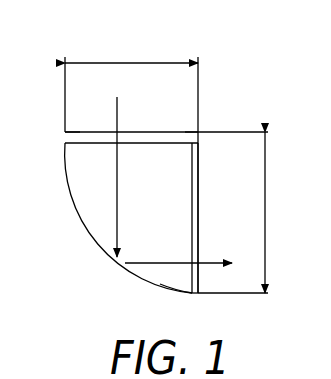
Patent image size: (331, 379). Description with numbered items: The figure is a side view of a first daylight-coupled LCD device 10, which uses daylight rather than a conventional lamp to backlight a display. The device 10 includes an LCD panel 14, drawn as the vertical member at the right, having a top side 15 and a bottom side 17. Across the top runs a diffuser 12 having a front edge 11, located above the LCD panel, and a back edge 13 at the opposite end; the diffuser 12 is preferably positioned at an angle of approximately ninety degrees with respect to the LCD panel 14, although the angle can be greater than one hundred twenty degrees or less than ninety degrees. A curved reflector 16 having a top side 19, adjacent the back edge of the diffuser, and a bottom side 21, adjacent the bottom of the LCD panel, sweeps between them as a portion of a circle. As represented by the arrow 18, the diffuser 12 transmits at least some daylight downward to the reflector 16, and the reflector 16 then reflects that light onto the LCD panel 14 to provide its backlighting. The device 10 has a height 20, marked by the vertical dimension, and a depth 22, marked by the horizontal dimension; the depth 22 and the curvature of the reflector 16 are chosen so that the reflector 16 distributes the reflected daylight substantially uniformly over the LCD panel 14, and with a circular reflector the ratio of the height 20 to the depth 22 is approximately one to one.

The daylight-coupled LCD device 10 is at (227, 66).
The front edge 11 is at (200, 131).
The diffuser 12 is at (67, 135).
The back edge 13 is at (66, 136).
The LCD panel 14 is at (200, 193).
The top side 15 is at (198, 143).
The curved reflector 16 is at (90, 238).
The bottom side 17 is at (197, 294).
The arrow 18 is at (119, 104).
The top side 19 is at (65, 144).
The height 20 is at (268, 195).
The bottom side 21 is at (191, 293).
The depth 22 is at (128, 62).